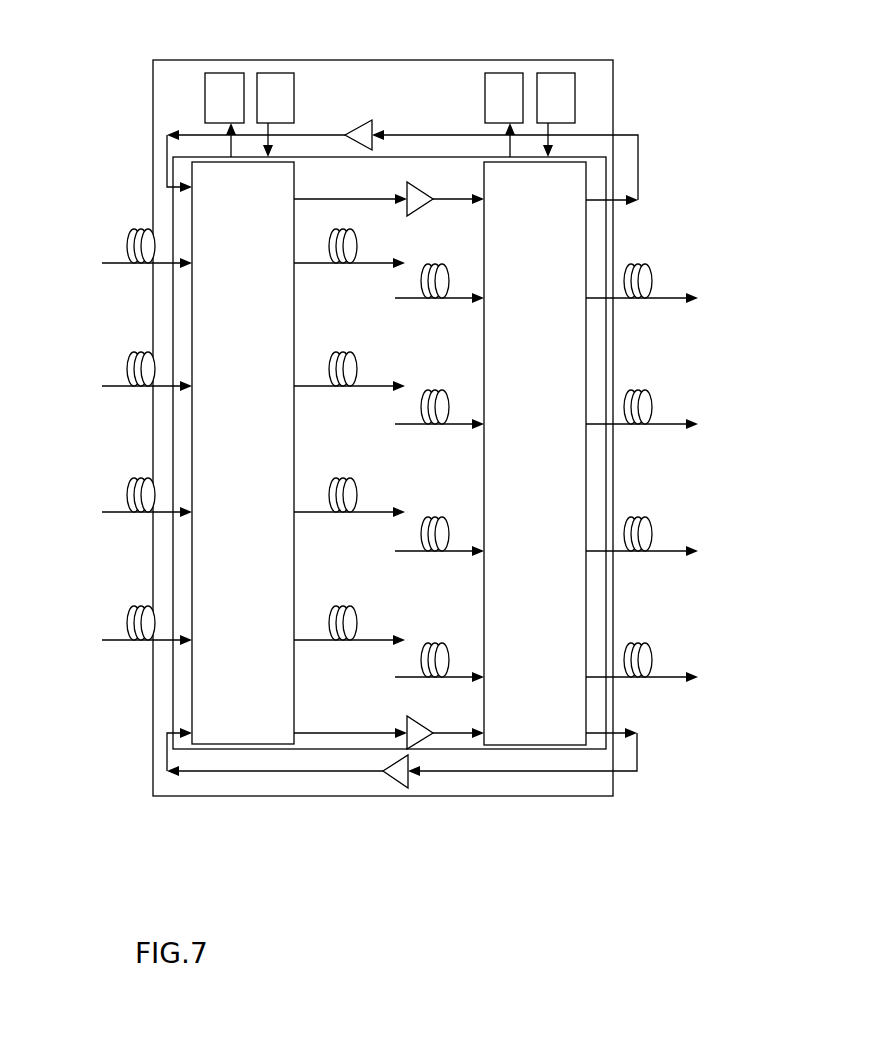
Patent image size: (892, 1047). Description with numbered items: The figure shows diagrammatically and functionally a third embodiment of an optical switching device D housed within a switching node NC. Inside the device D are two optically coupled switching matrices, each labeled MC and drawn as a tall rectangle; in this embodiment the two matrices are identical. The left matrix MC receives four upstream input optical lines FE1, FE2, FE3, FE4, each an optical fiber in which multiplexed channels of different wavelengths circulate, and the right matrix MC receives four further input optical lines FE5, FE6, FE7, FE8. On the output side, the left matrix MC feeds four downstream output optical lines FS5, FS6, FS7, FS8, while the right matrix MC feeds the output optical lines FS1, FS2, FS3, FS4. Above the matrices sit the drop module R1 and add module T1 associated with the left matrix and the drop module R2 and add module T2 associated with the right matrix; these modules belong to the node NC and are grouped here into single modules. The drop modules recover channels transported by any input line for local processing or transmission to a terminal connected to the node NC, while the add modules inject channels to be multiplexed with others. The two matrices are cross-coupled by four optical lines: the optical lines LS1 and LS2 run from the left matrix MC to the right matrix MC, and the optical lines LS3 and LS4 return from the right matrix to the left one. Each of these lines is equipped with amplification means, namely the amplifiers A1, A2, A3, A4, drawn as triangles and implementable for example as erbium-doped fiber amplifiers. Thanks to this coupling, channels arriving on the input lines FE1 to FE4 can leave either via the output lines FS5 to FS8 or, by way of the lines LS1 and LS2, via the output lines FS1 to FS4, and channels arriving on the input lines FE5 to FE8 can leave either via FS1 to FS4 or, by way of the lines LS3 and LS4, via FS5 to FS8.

The switching node NC is at (385, 60).
The optical switching device D is at (173, 203).
The switching matrix MC is at (208, 744).
The drop module R1 is at (204, 100).
The add module T1 is at (280, 73).
The drop module R2 is at (510, 73).
The add module T2 is at (575, 100).
The amplification means A1 is at (420, 195).
The amplification means A2 is at (430, 736).
The amplification means A3 is at (352, 133).
The amplification means A4 is at (393, 780).
The optical line LS1 is at (465, 202).
The optical line LS2 is at (312, 733).
The optical line LS3 is at (638, 148).
The optical line LS4 is at (618, 773).
The input optical line FE1 is at (114, 266).
The input optical line FE2 is at (114, 389).
The input optical line FE3 is at (114, 515).
The input optical line FE4 is at (114, 643).
The input optical line FE5 is at (458, 301).
The input optical line FE6 is at (458, 427).
The input optical line FE7 is at (458, 554).
The input optical line FE8 is at (460, 680).
The output optical line FS1 is at (675, 300).
The output optical line FS2 is at (675, 426).
The output optical line FS3 is at (675, 553).
The output optical line FS4 is at (677, 679).
The output optical line FS5 is at (303, 265).
The output optical line FS6 is at (303, 388).
The output optical line FS7 is at (303, 514).
The output optical line FS8 is at (303, 642).